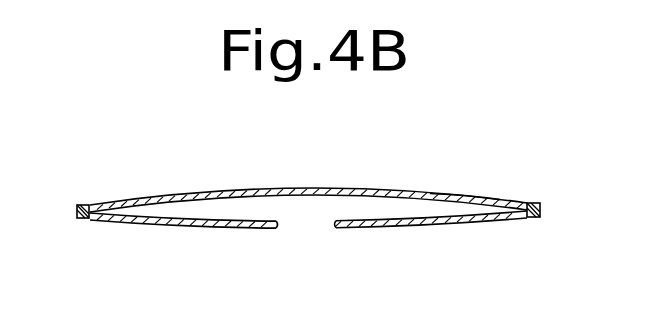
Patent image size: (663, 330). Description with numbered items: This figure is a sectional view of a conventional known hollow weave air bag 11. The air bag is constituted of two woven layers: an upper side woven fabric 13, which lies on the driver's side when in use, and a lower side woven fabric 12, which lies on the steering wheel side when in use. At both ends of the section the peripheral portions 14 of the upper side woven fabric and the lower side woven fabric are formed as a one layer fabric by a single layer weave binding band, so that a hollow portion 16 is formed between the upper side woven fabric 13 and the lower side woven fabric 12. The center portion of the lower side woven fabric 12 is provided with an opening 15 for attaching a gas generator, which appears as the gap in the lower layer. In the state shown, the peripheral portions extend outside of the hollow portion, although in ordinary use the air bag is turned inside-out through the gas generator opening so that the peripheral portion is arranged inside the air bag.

The hollow weave air bag 11 is at (512, 147).
The lower side woven fabric 12 is at (412, 229).
The upper side woven fabric 13 is at (413, 191).
The peripheral portions 14 is at (535, 203).
The opening 15 is at (312, 226).
The hollow portion 16 is at (457, 193).